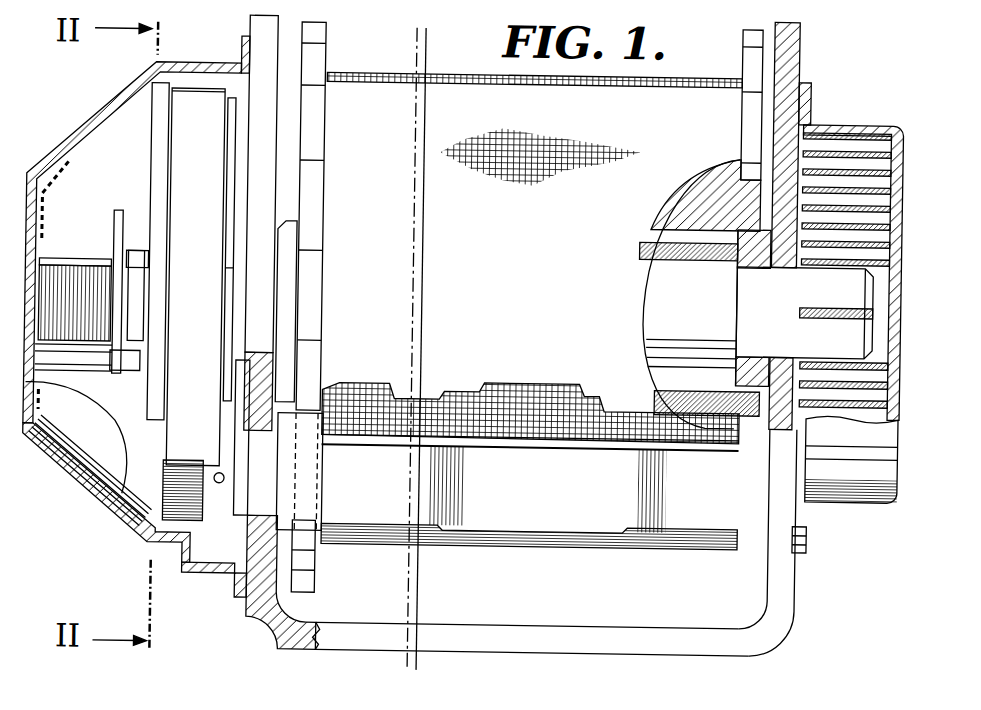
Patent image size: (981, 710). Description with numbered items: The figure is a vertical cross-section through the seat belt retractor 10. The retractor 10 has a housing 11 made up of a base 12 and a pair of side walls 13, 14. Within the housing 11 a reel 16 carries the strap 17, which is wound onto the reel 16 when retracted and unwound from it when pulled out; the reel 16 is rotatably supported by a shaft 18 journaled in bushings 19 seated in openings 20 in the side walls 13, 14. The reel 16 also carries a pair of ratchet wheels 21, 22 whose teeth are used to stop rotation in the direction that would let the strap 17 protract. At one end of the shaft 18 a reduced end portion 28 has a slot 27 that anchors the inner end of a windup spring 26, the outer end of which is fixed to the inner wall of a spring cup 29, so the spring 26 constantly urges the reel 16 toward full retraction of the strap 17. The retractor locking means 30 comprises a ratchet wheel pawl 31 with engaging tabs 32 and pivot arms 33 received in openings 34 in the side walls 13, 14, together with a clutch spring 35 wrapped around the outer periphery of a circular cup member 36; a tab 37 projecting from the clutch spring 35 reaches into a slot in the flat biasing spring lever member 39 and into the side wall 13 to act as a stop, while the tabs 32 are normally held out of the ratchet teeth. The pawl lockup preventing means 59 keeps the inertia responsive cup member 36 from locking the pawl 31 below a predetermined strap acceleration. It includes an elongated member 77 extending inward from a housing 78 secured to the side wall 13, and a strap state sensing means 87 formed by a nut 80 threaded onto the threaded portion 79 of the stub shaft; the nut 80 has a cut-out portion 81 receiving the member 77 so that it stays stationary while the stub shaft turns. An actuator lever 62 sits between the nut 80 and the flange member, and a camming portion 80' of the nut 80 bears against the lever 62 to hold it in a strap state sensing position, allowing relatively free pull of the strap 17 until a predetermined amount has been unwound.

The seat belt retractor 10 is at (440, 54).
The housing 11 is at (799, 608).
The base 12 is at (557, 641).
The side wall 13 is at (255, 31).
The side wall 14 is at (782, 38).
The reel 16 is at (668, 214).
The strap 17 is at (707, 183).
The shaft 18 is at (699, 322).
The bearing hub 19 is at (766, 266).
The openings 20 is at (777, 368).
The ratchet wheel 21 is at (325, 30).
The ratchet wheel 22 is at (748, 74).
The windup spring 26 is at (824, 163).
The slot 27 is at (833, 325).
The reduced end portion 28 is at (847, 272).
The spring cup 29 is at (860, 471).
The retractor locking means 30 is at (553, 558).
The ratchet wheel pawl 31 is at (546, 489).
The engaging tabs 32 is at (328, 426).
The pivot arms 33 is at (214, 504).
The openings 34 is at (260, 507).
The clutch spring 35 is at (201, 255).
The circular cup member 36 is at (224, 122).
The tab 37 is at (306, 429).
The biasing spring lever member 39 is at (240, 385).
The pawl lockup preventing means 59 is at (58, 236).
The actuator lever 62 is at (229, 414).
The elongated member 77 is at (60, 364).
The housing 78 is at (74, 485).
The threaded portion 79 is at (101, 273).
The nut 80 is at (119, 325).
The camming portion 80' is at (84, 470).
The cut-out portion 81 is at (140, 362).
The strap state sensing means 87 is at (130, 219).